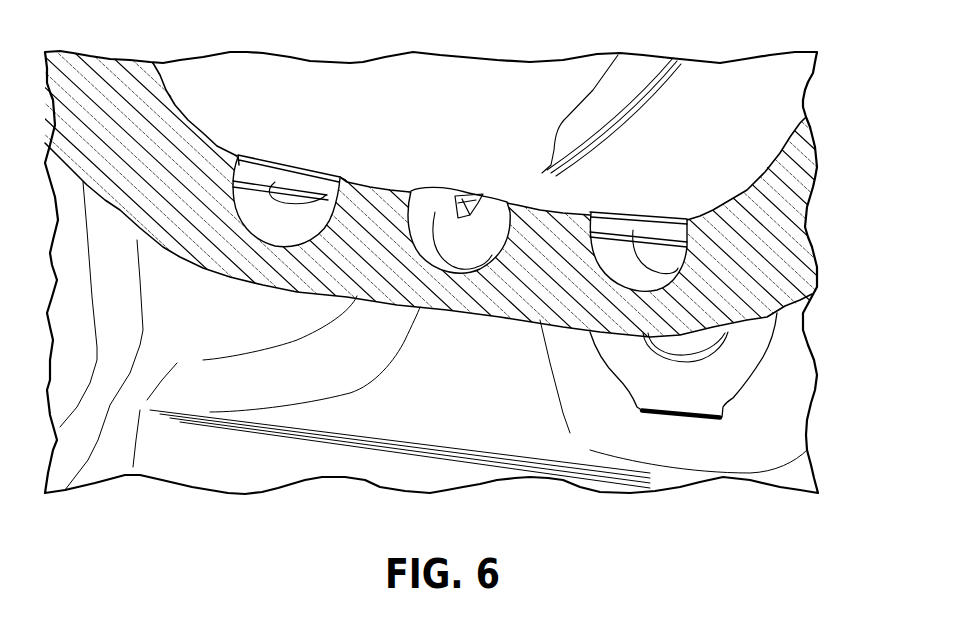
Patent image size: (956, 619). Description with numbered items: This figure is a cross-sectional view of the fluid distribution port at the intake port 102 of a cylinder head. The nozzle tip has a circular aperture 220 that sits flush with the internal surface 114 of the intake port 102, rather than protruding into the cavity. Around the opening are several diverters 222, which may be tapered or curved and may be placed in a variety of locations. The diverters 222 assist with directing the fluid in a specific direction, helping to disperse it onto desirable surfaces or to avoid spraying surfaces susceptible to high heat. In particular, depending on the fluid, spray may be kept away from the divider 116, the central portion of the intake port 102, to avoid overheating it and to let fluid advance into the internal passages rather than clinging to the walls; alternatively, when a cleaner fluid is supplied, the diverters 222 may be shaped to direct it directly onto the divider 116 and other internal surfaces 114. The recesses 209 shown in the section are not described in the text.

The intake port 102 is at (731, 148).
The internal surface 114 is at (282, 129).
The divider 116 is at (622, 102).
The aperture 220 is at (343, 180).
The diverters 222 is at (288, 182).
The pocket 209 is at (288, 228).